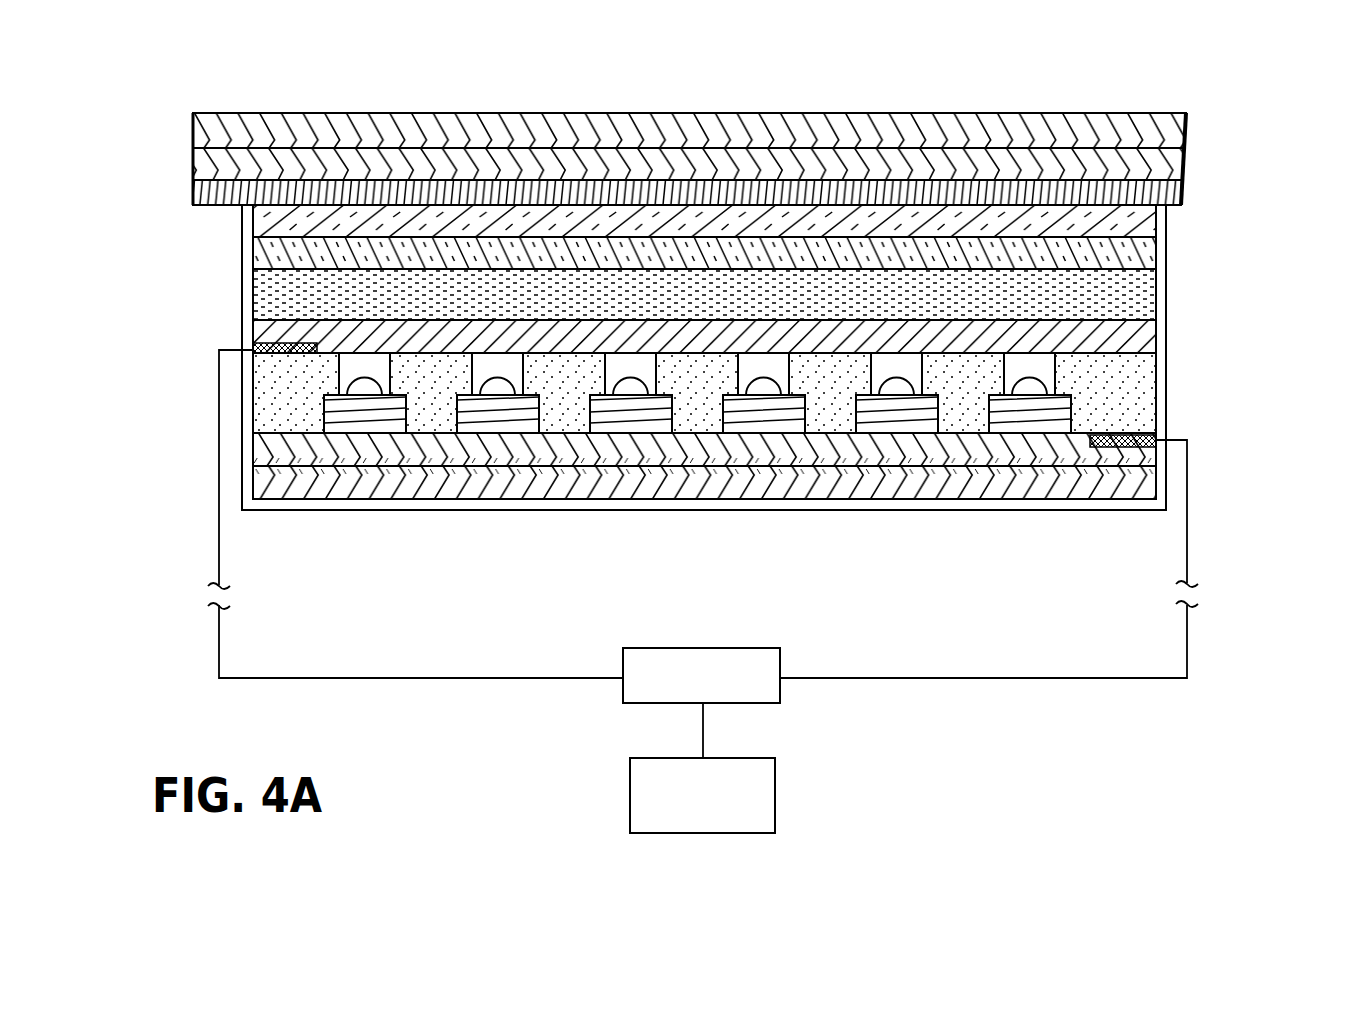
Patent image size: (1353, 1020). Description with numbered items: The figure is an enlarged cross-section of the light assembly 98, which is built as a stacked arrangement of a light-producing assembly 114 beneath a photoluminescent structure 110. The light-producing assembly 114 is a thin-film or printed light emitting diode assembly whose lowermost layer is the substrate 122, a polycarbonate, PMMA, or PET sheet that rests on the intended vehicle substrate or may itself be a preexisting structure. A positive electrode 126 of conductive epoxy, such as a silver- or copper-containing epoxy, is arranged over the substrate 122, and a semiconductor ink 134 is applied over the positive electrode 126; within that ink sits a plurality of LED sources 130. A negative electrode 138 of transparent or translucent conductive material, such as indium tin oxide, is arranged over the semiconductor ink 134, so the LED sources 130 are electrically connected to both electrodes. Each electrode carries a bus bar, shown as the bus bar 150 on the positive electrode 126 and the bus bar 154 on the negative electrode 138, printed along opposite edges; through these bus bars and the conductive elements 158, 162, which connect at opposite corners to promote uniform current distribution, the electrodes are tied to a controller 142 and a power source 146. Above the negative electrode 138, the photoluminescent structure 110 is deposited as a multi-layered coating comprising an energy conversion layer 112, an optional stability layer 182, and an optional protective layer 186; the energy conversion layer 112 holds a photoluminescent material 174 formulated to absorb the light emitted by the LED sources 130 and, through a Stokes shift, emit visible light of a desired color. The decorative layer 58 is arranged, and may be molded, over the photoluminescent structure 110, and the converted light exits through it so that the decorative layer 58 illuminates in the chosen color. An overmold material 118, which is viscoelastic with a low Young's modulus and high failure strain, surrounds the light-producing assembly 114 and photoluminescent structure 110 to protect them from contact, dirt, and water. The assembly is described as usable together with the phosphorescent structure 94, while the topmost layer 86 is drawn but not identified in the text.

The cover layer 86 is at (208, 130).
The decorative layer 58 is at (208, 160).
The phosphorescent structure 94 is at (205, 195).
The overmold material 118 is at (1166, 188).
The protective layer 186 is at (1160, 220).
The stability layer 182 is at (1160, 255).
The energy conversion layer 112 is at (1163, 288).
The photoluminescent material 174 is at (1122, 300).
The photoluminescent structure 110 is at (212, 205).
The light-producing assembly 114 is at (146, 503).
The light assembly 98 is at (1296, 275).
The negative electrode 138 is at (1157, 338).
The bus bar 154 is at (253, 348).
The semiconductor ink 134 is at (1160, 387).
The bus bar 150 is at (1157, 440).
The positive electrode 126 is at (1160, 455).
The substrate 122 is at (1160, 488).
The LED sources 130 is at (378, 417).
The conductive element 162 is at (218, 548).
The conductive element 158 is at (1189, 550).
The controller 142 is at (780, 692).
The power source 146 is at (775, 778).